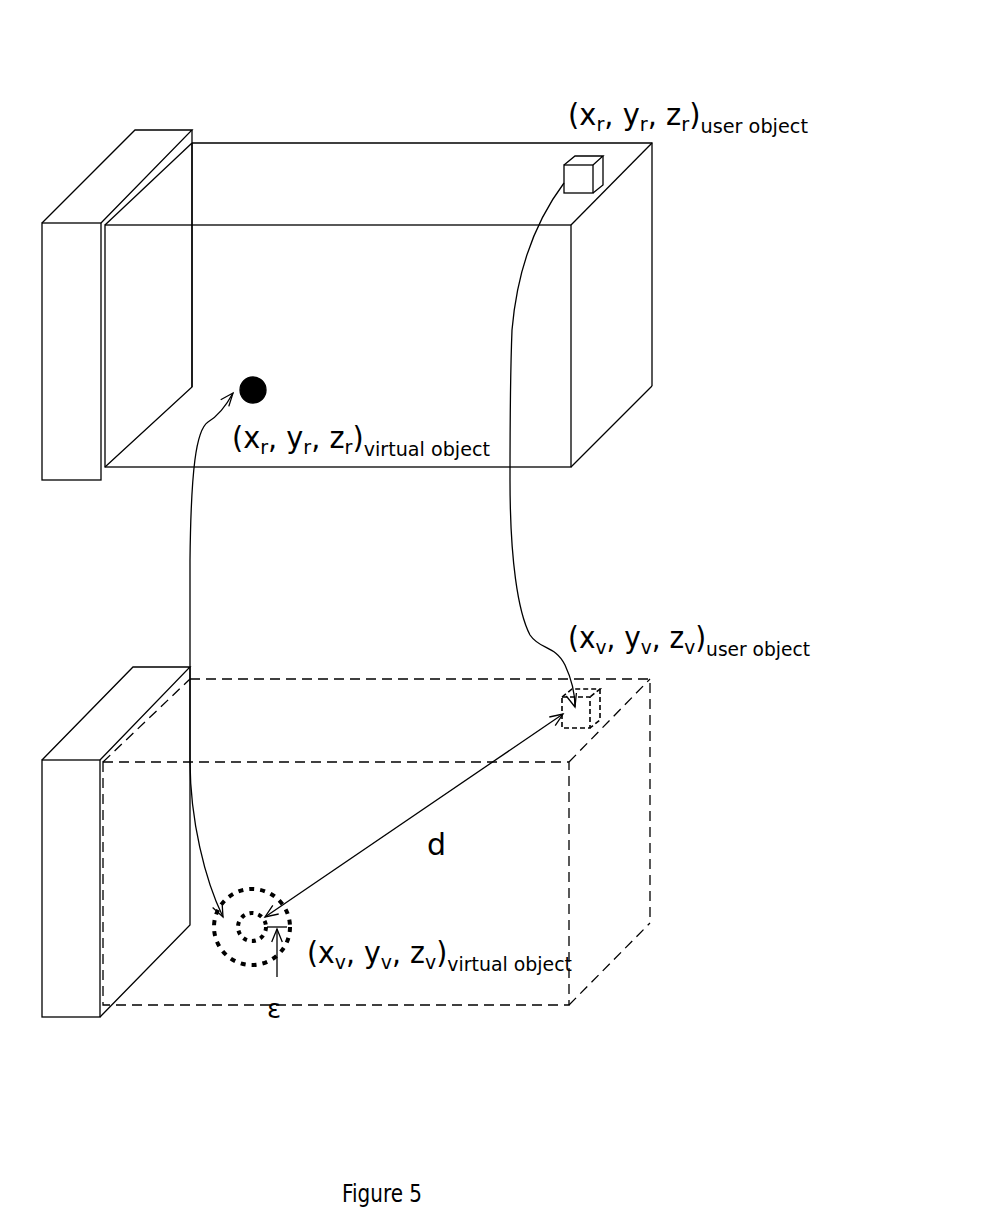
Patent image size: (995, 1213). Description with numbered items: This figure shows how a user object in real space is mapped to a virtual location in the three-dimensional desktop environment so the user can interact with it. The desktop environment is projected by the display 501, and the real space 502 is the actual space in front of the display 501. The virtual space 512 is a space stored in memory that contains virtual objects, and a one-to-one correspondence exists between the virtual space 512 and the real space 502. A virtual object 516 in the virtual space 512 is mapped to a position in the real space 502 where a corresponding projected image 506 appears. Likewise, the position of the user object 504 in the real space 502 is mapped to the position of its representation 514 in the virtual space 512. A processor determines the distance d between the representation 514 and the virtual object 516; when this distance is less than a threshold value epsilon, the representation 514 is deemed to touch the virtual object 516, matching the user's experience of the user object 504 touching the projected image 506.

The display 501 is at (82, 192).
The real space 502 is at (273, 85).
The user object 504 is at (575, 156).
The projected image 506 is at (265, 378).
The virtual space 512 is at (345, 705).
The representation of the user object 514 is at (603, 703).
The virtual object 516 is at (250, 917).